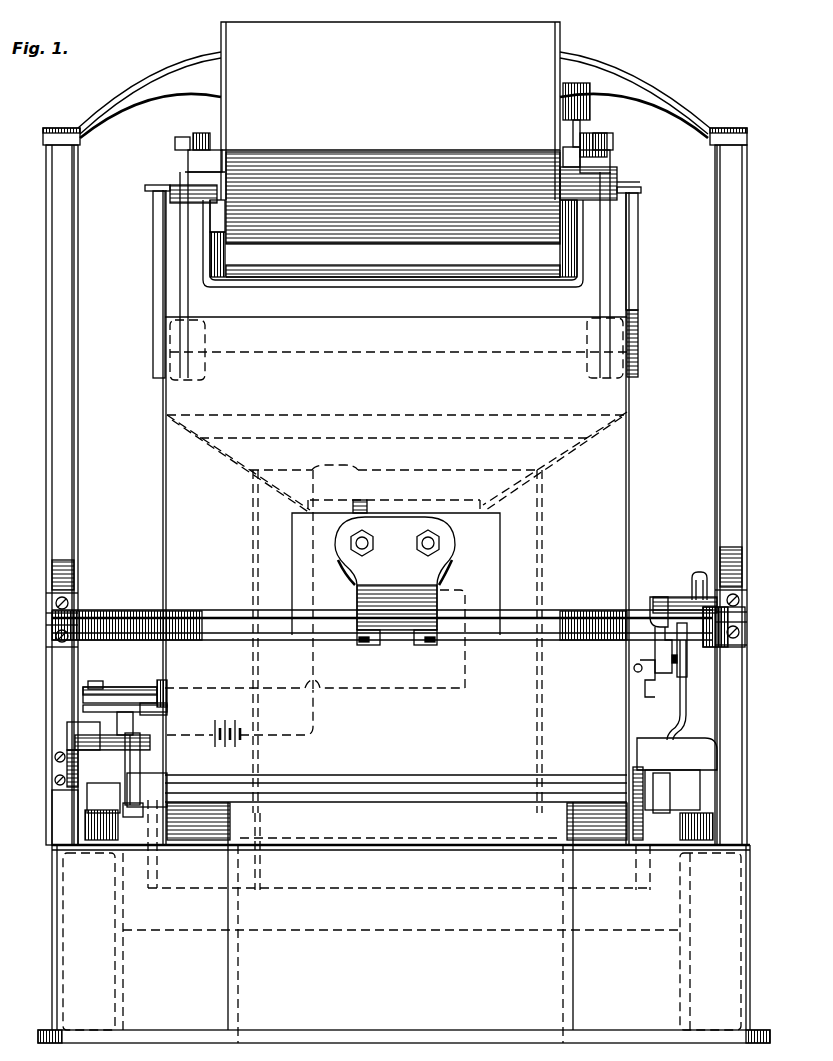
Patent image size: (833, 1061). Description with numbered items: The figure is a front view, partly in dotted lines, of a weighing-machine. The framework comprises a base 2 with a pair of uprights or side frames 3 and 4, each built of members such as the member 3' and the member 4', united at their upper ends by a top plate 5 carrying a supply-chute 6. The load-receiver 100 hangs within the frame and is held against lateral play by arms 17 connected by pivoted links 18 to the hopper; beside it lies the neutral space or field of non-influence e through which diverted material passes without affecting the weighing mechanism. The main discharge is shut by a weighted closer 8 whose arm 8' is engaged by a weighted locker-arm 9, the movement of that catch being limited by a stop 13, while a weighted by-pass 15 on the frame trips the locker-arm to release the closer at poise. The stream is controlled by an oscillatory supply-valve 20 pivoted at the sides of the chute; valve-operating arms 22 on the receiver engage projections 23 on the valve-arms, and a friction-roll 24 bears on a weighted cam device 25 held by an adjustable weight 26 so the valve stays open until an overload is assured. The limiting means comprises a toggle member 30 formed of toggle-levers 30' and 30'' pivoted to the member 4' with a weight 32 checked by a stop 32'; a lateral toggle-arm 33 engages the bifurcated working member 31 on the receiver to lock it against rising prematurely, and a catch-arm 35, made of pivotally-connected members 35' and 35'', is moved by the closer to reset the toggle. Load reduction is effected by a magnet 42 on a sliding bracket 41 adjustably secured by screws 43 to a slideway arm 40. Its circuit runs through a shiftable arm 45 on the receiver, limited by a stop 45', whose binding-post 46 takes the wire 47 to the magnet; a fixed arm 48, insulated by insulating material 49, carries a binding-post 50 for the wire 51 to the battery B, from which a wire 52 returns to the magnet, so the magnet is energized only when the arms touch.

The base 2 is at (350, 1030).
The side frame 3 is at (50, 486).
The side frame member 3' is at (86, 495).
The side frame 4 is at (740, 486).
The side frame member 4' is at (700, 495).
The top plate 5 is at (394, 95).
The supply-chute 6 is at (390, 111).
The closer 8 is at (117, 811).
The closer arm 8' is at (160, 770).
The locker-arm 9 is at (120, 715).
The stop 13 is at (163, 680).
The by-pass 15 is at (135, 740).
The arms 17 is at (180, 268).
The pivoted links 18 is at (200, 133).
The supply-valve 20 is at (367, 273).
The valve-operating arms 22 is at (153, 240).
The projections 23 is at (620, 182).
The friction-roll 24 is at (563, 155).
The cam device 25 is at (592, 133).
The adjustable weight 26 is at (590, 90).
The toggle member 30 is at (685, 594).
The toggle-lever 30' is at (650, 598).
The toggle-lever 30'' is at (688, 650).
The working member 31 is at (650, 686).
The weight 32 is at (696, 572).
The stop 32' is at (746, 627).
The toggle-arm 33 is at (634, 668).
The catch-arm 35 is at (675, 781).
The arm member 35' is at (726, 721).
The arm member 35'' is at (733, 677).
The projecting arm 40 is at (222, 618).
The sliding bracket 41 is at (357, 597).
The magnet 42 is at (441, 540).
The screws 43 is at (425, 645).
The shiftable arm 45 is at (120, 686).
The stop 45' is at (178, 690).
The binding-post 46 is at (95, 681).
The wire 47 is at (315, 684).
The fixed arm 48 is at (55, 768).
The insulating material 49 is at (53, 797).
The binding-post 50 is at (67, 730).
The wire 51 is at (190, 724).
The wire 52 is at (276, 712).
The load-receiver 100 is at (163, 543).
The bearing block A is at (403, 565).
The battery B is at (227, 724).
The casing C is at (292, 536).
The field of non-influence e is at (462, 640).